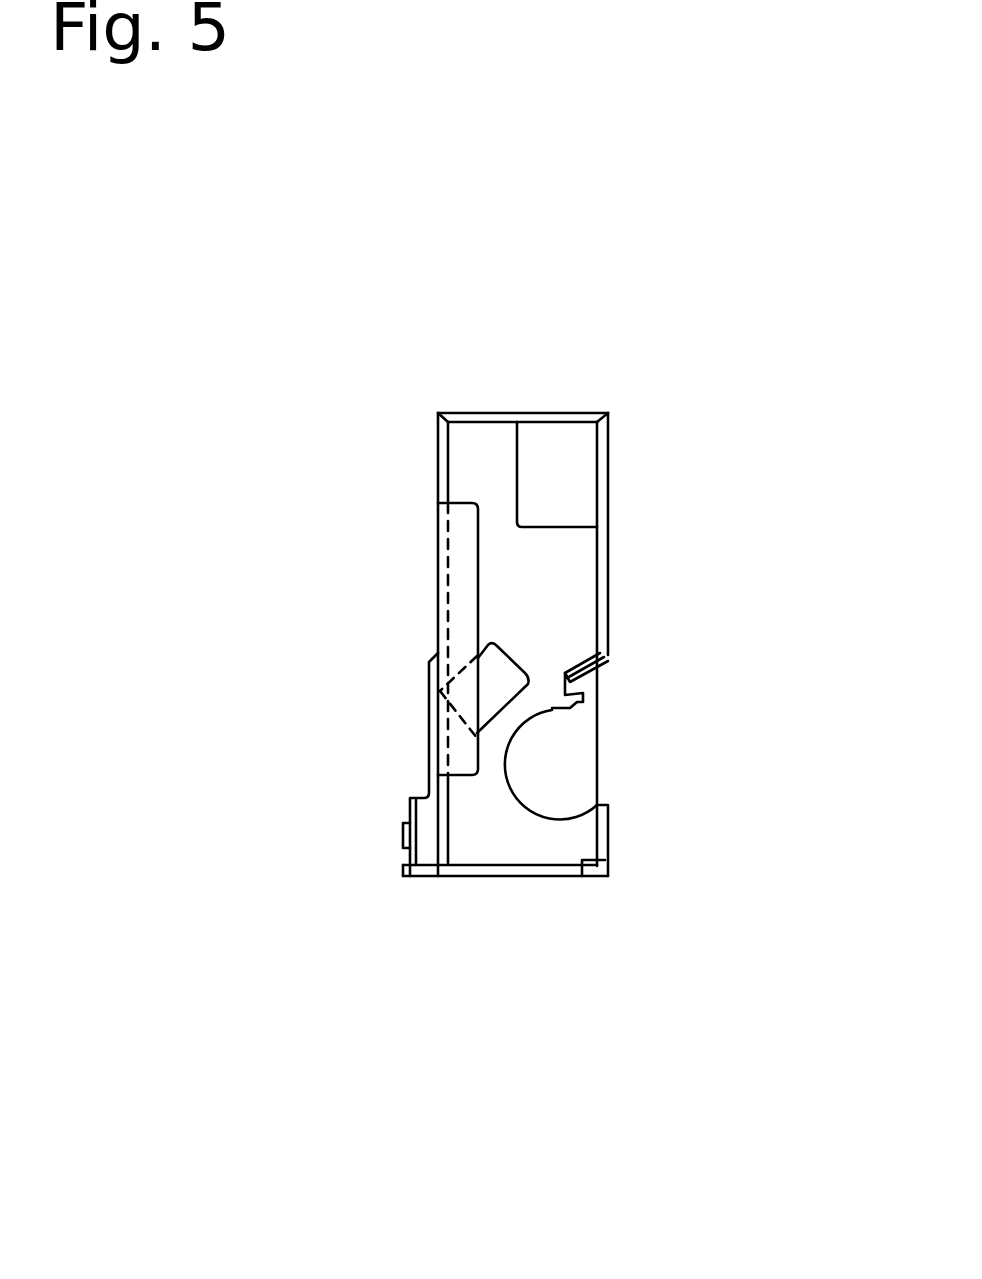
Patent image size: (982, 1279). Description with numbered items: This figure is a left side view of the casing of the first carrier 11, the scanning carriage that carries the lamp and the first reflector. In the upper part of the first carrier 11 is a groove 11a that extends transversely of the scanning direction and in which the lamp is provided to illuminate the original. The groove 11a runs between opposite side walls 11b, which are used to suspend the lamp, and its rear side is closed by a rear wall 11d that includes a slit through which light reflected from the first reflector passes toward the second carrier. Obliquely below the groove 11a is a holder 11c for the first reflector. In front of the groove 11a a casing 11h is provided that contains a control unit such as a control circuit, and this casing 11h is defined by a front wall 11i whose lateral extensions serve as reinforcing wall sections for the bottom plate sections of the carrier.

The first carrier 11 is at (530, 397).
The groove 11a is at (543, 787).
The side walls 11b is at (490, 747).
The holder 11c is at (523, 692).
The rear wall 11d is at (510, 877).
The casing 11h is at (607, 558).
The front wall 11i is at (472, 413).